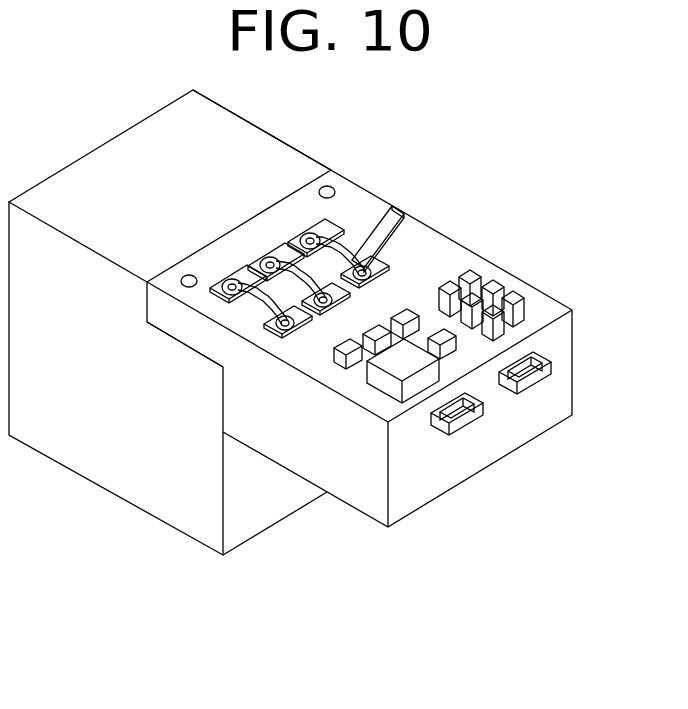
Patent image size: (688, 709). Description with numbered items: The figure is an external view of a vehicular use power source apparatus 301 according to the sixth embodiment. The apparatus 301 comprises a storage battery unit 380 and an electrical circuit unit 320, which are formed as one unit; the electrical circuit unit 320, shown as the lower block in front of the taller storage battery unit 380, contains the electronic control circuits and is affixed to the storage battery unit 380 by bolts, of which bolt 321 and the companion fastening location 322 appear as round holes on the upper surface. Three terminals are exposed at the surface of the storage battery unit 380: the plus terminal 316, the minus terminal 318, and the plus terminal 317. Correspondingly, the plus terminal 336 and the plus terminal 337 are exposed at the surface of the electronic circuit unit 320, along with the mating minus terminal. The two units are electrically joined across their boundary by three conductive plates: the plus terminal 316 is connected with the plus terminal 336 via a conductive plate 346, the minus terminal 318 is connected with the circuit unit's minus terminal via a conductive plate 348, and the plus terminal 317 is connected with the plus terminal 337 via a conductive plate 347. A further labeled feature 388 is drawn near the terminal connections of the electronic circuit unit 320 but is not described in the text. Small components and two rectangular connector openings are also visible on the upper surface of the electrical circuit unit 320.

The vehicular use power source apparatus 301 is at (609, 117).
The plus terminal 316 is at (213, 270).
The plus terminal 317 is at (303, 228).
The minus terminal 318 is at (229, 283).
The electrical circuit unit 320 is at (355, 485).
The bolt 321 is at (183, 270).
The positioning hole 322 is at (331, 186).
The plus terminal 336 is at (268, 348).
The plus terminal 337 is at (357, 276).
The conductive plate 346 is at (187, 345).
The conductive plate 347 is at (395, 212).
The conductive plate 348 is at (262, 259).
The storage battery unit 380 is at (125, 478).
The bonding wire 388 is at (321, 307).